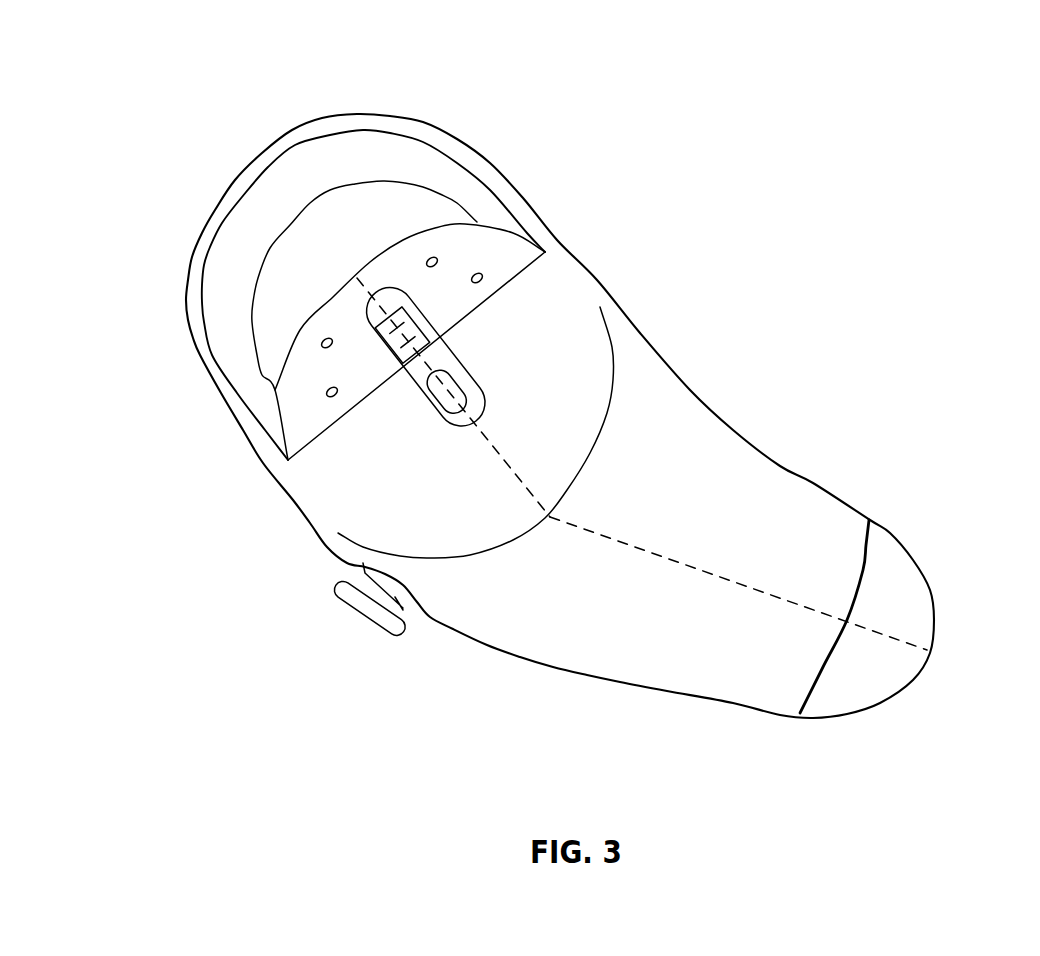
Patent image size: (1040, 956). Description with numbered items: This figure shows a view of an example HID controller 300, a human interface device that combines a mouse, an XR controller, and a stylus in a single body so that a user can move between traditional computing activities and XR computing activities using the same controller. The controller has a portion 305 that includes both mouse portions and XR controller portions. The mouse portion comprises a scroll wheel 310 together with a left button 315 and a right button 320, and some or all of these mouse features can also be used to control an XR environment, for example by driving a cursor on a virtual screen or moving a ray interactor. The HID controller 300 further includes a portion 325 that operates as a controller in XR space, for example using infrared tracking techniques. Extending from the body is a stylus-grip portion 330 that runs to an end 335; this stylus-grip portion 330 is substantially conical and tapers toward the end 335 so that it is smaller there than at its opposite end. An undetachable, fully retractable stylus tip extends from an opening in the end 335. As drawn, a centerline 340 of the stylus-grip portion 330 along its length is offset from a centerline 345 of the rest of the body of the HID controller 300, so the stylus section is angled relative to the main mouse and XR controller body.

The HID controller 300 is at (693, 345).
The portion 305 is at (347, 613).
The scroll wheel 310 is at (390, 347).
The left button 315 is at (309, 397).
The right button 320 is at (469, 291).
The portion 325 is at (588, 226).
The stylus-grip portion 330 is at (794, 729).
The end 335 is at (883, 587).
The centerline 340 is at (714, 561).
The centerline 345 is at (506, 471).